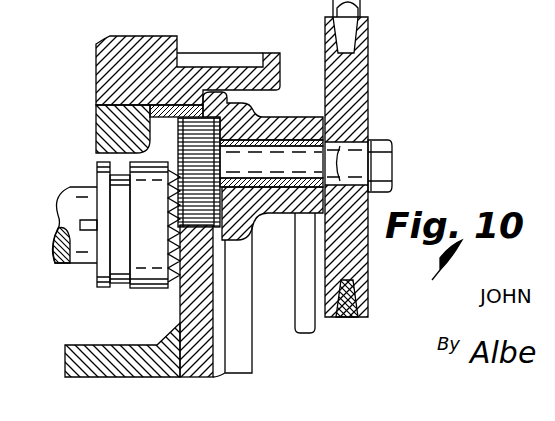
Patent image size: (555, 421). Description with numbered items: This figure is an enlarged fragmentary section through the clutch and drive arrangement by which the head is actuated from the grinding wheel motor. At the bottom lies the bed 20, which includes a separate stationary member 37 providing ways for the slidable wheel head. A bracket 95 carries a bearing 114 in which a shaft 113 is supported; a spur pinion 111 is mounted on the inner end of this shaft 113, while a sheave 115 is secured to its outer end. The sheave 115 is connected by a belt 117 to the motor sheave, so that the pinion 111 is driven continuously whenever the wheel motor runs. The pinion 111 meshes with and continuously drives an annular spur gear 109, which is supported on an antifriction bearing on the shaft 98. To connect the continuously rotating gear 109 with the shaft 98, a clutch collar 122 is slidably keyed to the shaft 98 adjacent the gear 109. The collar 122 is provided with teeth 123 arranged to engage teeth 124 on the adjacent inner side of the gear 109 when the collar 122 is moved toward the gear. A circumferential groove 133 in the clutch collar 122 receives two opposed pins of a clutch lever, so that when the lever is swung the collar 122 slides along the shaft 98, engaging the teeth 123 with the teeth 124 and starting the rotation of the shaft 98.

The stationary member 37 is at (113, 73).
The bearing 114 is at (298, 130).
The annular spur gear 109 is at (236, 92).
The sheave 115 is at (362, 100).
The shaft 113 is at (291, 163).
The spur pinion 111 is at (193, 167).
The clutch collar 122 is at (97, 180).
The shaft 98 is at (67, 207).
The teeth 123 is at (172, 202).
The teeth 124 is at (168, 221).
The circumferential groove 133 is at (123, 278).
The bed 20 is at (88, 350).
The bracket 95 is at (268, 326).
The belt 117 is at (350, 327).